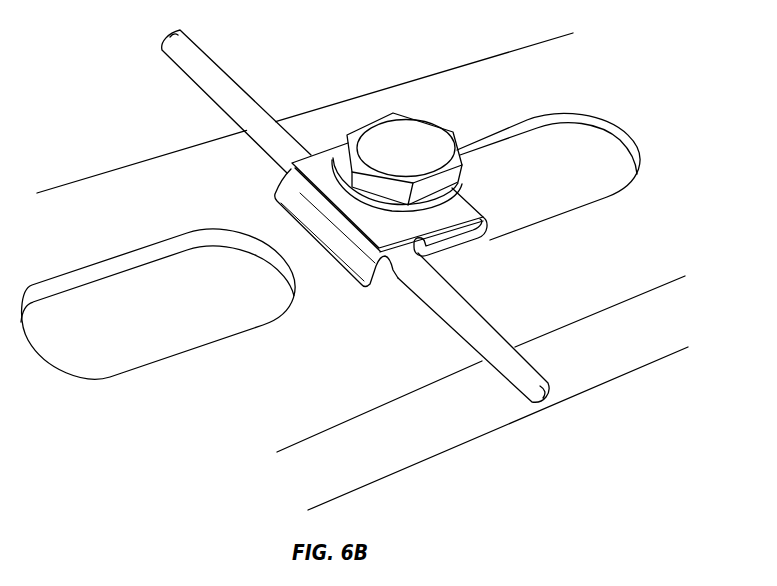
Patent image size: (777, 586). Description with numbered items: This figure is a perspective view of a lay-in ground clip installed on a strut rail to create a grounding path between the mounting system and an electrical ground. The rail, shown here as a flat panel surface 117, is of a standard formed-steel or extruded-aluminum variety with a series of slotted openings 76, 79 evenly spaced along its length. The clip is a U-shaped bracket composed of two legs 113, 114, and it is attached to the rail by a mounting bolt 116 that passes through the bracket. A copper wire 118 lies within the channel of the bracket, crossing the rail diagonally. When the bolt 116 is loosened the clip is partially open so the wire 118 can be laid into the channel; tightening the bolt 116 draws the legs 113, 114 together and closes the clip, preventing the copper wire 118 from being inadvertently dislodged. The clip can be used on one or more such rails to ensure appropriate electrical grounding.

The slotted opening 76 is at (146, 320).
The slotted opening 79 is at (552, 178).
The leg 113 is at (445, 242).
The leg 114 is at (460, 208).
The mounting bolt 116 is at (414, 128).
The panel surface 117 is at (152, 172).
The copper wire 118 is at (236, 88).